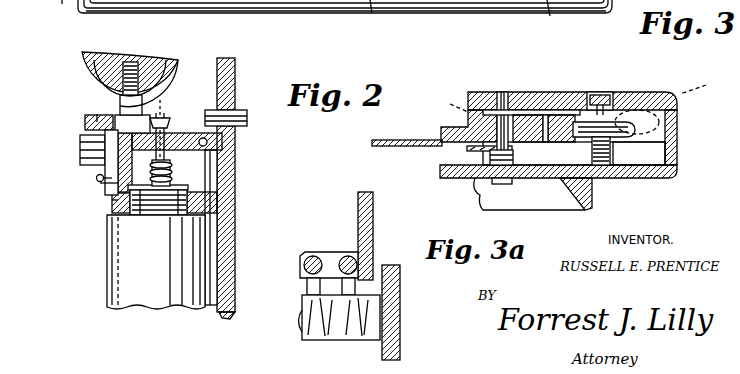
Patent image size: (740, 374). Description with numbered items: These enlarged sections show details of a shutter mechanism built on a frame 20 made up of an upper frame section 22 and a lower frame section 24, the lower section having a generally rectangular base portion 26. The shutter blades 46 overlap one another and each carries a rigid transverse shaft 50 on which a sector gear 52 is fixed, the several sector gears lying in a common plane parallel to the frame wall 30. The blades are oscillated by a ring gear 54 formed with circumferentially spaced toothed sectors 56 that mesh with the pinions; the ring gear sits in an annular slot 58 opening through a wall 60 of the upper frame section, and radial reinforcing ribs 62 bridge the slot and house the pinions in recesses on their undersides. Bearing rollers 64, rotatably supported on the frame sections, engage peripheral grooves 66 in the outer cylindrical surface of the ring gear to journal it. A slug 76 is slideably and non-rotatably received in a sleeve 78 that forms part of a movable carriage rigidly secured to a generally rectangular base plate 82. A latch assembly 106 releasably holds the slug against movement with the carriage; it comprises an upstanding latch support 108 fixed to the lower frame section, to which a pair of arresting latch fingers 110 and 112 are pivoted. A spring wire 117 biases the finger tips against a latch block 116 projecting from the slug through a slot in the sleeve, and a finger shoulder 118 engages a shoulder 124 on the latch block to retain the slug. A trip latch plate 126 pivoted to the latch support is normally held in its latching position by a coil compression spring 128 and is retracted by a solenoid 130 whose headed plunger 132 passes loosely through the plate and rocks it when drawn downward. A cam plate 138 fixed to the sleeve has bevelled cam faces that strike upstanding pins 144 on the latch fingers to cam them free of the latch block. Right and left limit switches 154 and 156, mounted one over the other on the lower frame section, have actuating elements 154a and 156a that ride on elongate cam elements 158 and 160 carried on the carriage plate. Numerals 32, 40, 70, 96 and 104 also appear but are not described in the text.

In FIG. 3, the frame 20 is at (596, 197).
In FIG. 3, the upper frame section 22 is at (678, 120).
In FIG. 2, the lower frame section 24 is at (238, 262).
In FIG. 3, the lower frame section 24 is at (679, 173).
In FIG. 3A, the lower frame section 24 is at (403, 318).
In FIG. 2, the base portion 26 is at (236, 158).
In FIG. 3, the base portion 26 is at (550, 16).
In FIG. 3, the frame wall 30 is at (451, 178).
In FIG. 3, the plate 32 is at (451, 162).
In FIG. 3, the cavity 40 is at (678, 150).
In FIG. 3, the shutter blade 46 is at (404, 126).
In FIG. 3, the transverse shaft 50 is at (518, 118).
In FIG. 3, the sector gear 52 is at (523, 122).
In FIG. 3, the ring gear 54 is at (594, 92).
In FIG. 3, the toothed sector 56 is at (545, 141).
In FIG. 3, the annular slot 58 is at (579, 211).
In FIG. 3, the wall 60 is at (577, 95).
In FIG. 3, the radial reinforcing rib 62 is at (525, 92).
In FIG. 3, the bearing roller 64 is at (636, 122).
In FIG. 3, the peripheral groove 66 is at (574, 143).
In FIG. 2, the cup 70 is at (73, 73).
In FIG. 2, the slug 76 is at (160, 72).
In FIG. 2, the sleeve 78 is at (180, 74).
In FIG. 3A, the base plate 82 is at (357, 210).
In FIG. 3, the strip 96 is at (245, 0).
In FIG. 3, the edge 104 is at (62, 3).
In FIG. 2, the latch assembly 106 is at (64, 192).
In FIG. 2, the latch support 108 is at (236, 190).
In FIG. 2, the latch finger 110 is at (118, 200).
In FIG. 2, the latch finger 112 is at (140, 207).
In FIG. 2, the latch block 116 is at (85, 120).
In FIG. 2, the spring wire 117 is at (100, 183).
In FIG. 2, the shoulder 118 is at (85, 143).
In FIG. 2, the shoulder 124 is at (135, 138).
In FIG. 2, the latch plate 126 is at (236, 104).
In FIG. 2, the coil compression spring 128 is at (171, 170).
In FIG. 2, the solenoid 130 is at (113, 271).
In FIG. 3, the solenoid 130 is at (372, 13).
In FIG. 2, the headed plunger 132 is at (155, 112).
In FIG. 2, the cam plate 138 is at (97, 114).
In FIG. 2, the upstanding pin 144 is at (96, 178).
In FIG. 3A, the right limit switch 154 is at (303, 339).
In FIG. 3A, the actuating element 154a is at (307, 284).
In FIG. 3A, the left limit switch 156 is at (345, 339).
In FIG. 3A, the actuating element 156a is at (360, 272).
In FIG. 3A, the cam element 158 is at (313, 256).
In FIG. 3A, the cam element 160 is at (347, 256).